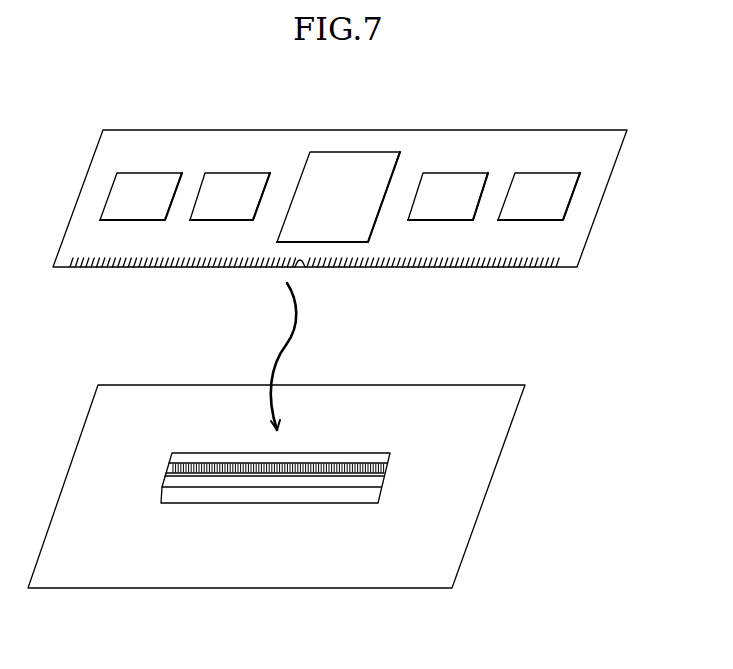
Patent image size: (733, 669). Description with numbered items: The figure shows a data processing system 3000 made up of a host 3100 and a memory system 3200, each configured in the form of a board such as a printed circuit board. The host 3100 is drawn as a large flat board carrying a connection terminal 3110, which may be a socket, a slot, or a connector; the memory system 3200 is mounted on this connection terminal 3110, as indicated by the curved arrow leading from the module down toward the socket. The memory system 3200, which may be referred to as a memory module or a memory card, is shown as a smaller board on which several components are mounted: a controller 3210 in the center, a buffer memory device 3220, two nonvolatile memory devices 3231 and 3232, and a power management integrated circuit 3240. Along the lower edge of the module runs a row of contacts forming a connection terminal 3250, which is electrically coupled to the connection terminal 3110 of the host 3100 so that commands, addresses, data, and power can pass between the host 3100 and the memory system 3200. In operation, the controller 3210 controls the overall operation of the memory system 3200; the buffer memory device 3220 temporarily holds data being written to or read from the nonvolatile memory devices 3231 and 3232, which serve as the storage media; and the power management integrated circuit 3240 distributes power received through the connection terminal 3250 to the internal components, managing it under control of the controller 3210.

The data processing system 3000 is at (197, 97).
The host 3100 is at (276, 486).
The connection terminal 3110 is at (408, 447).
The memory system 3200 is at (340, 198).
The controller 3210 is at (338, 197).
The buffer memory device 3220 is at (230, 196).
The nonvolatile memory device 3231 is at (448, 196).
The nonvolatile memory device 3232 is at (539, 196).
The power management integrated circuit 3240 is at (141, 196).
The connection terminal 3250 is at (88, 268).